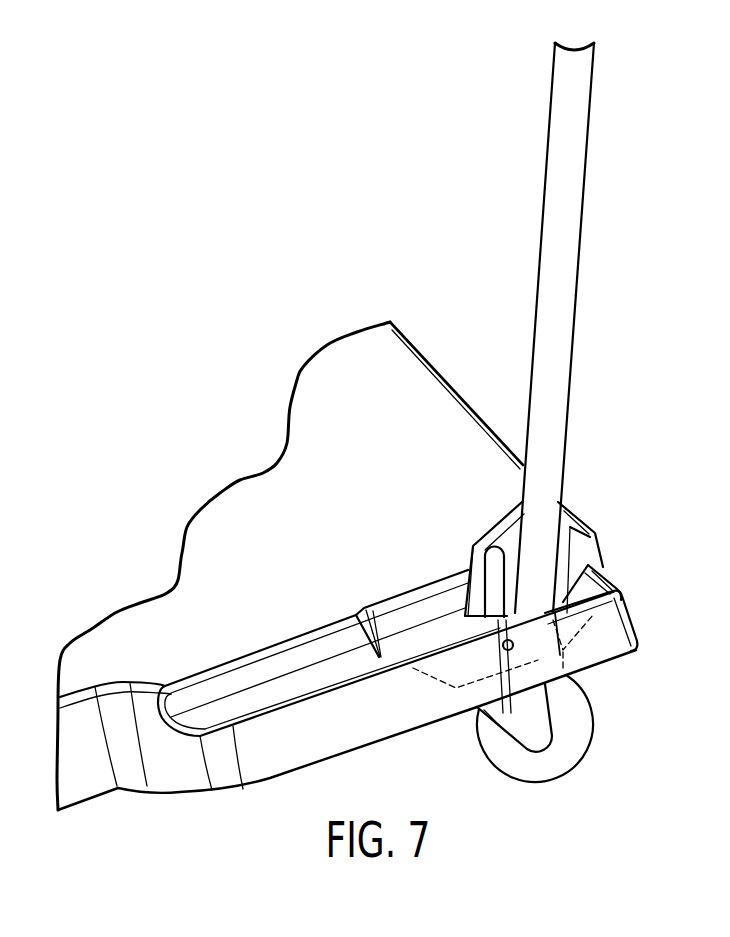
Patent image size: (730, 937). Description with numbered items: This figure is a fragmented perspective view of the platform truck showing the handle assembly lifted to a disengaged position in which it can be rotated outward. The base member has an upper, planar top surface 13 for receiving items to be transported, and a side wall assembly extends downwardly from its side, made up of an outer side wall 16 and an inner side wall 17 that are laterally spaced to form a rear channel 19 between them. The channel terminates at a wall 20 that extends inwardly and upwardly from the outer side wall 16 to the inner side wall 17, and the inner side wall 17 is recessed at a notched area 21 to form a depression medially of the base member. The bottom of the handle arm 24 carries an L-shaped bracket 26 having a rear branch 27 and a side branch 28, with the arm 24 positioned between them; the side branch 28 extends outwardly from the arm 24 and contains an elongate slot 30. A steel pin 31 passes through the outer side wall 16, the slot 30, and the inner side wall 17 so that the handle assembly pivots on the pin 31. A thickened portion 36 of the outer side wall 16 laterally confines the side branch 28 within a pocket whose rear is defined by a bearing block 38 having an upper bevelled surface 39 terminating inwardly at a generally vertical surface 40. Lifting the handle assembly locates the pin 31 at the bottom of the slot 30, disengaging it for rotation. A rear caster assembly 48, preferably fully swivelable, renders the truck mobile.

The top surface 13 is at (324, 480).
The outer side wall 16 is at (287, 750).
The inner side wall 17 is at (217, 687).
The rear channel 19 is at (333, 677).
The walls 20 is at (127, 767).
The notched area 21 is at (87, 767).
The handle arm 24 is at (562, 382).
The bracket 26 is at (561, 451).
The rear branch 27 is at (575, 552).
The side branch 28 is at (508, 520).
The elongate slot 30 is at (480, 547).
The pin 31 is at (515, 649).
The thickened portion 36 is at (427, 650).
The bearing block 38 is at (600, 637).
The bevelled surface 39 is at (585, 588).
The vertical surface 40 is at (578, 677).
The rear caster assembly 48 is at (535, 733).